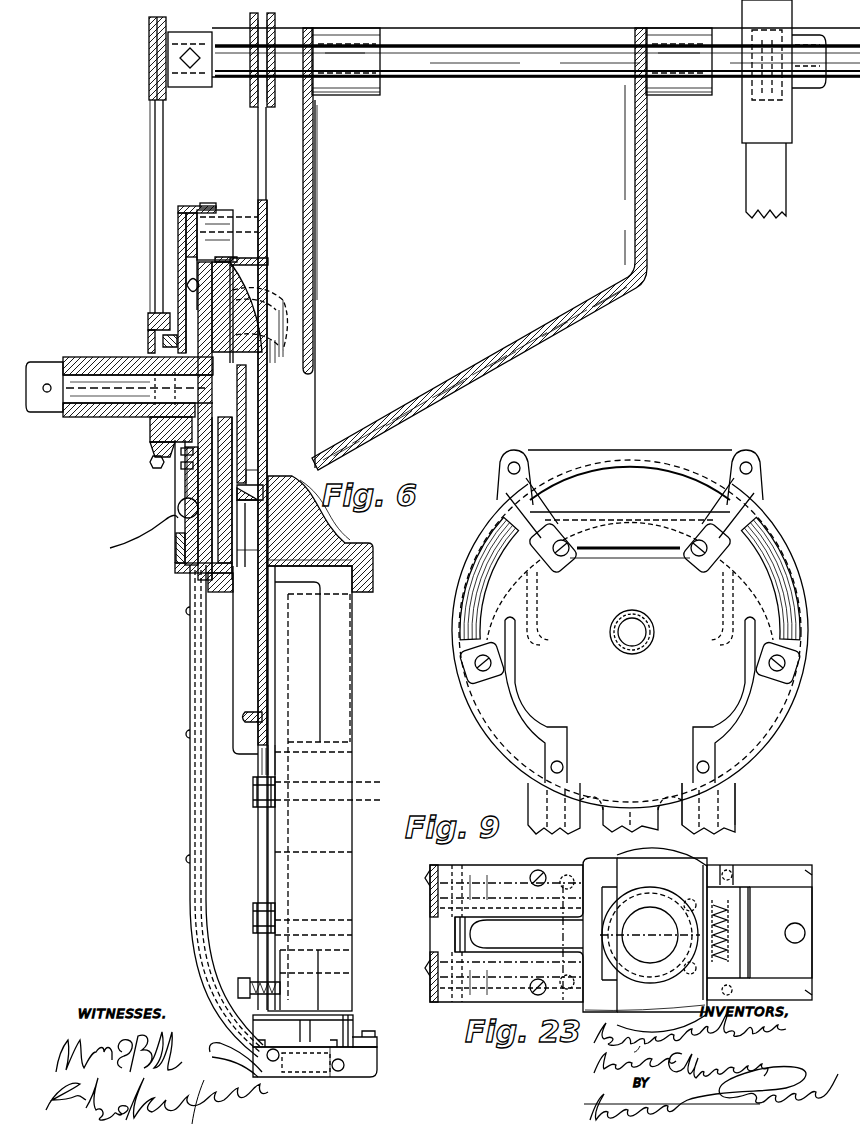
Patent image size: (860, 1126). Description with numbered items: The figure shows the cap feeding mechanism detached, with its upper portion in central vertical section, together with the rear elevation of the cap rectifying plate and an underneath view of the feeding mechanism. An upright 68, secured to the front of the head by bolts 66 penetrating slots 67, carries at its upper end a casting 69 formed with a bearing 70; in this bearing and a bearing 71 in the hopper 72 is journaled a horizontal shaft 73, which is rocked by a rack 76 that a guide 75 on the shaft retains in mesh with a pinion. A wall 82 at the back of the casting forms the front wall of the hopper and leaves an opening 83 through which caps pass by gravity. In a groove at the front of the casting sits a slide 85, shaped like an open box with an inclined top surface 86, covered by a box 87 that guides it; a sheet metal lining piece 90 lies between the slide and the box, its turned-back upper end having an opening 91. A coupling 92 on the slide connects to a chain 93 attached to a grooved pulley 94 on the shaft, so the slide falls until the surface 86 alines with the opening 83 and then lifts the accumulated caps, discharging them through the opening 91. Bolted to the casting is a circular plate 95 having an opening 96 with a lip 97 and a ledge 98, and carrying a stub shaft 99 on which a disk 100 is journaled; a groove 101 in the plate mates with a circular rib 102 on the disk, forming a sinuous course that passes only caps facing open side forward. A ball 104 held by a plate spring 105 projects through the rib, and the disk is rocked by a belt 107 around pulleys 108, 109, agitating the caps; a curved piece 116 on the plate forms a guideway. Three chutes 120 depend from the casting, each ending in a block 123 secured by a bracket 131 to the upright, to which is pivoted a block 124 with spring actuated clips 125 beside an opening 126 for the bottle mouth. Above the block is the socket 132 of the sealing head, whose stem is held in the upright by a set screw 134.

In FIG. 6, the bolts 66 is at (254, 808).
In FIG. 6, the slots 67 is at (262, 860).
In FIG. 6, the upright 68 is at (344, 684).
In FIG. 6, the casting 69 is at (326, 530).
In FIG. 6, the bearing 70 is at (352, 92).
In FIG. 6, the bearing 71 is at (682, 92).
In FIG. 6, the hopper 72 is at (570, 325).
In FIG. 6, the horizontal shaft 73 is at (496, 74).
In FIG. 6, the guide 75 is at (790, 130).
In FIG. 6, the rack 76 is at (780, 178).
In FIG. 6, the wall 82 is at (312, 345).
In FIG. 6, the opening 83 is at (312, 407).
In FIG. 6, the slide 85 is at (262, 690).
In FIG. 6, the top surface 86 is at (250, 505).
In FIG. 6, the box 87 is at (185, 490).
In FIG. 6, the sheet metal lining piece 90 is at (228, 460).
In FIG. 6, the opening 91 is at (245, 262).
In FIG. 6, the coupling 92 is at (262, 483).
In FIG. 6, the chain 93 is at (262, 410).
In FIG. 6, the grooved pulley 94 is at (278, 22).
In FIG. 6, the circular plate 95 is at (185, 556).
In FIG. 9, the circular plate 95 is at (500, 735).
In FIG. 6, the opening 96 is at (178, 248).
In FIG. 9, the opening 96 is at (652, 475).
In FIG. 6, the lip 97 is at (226, 266).
In FIG. 9, the lip 97 is at (632, 512).
In FIG. 6, the ledge 98 is at (212, 282).
In FIG. 6, the stub shaft 99 is at (107, 410).
In FIG. 6, the disk 100 is at (176, 538).
In FIG. 6, the groove 101 is at (226, 540).
In FIG. 6, the circular rib 102 is at (178, 508).
In FIG. 6, the ball 104 is at (112, 548).
In FIG. 6, the plate spring 105 is at (181, 476).
In FIG. 6, the belt 107 is at (156, 236).
In FIG. 6, the pulley 108 is at (149, 463).
In FIG. 6, the pulley 109 is at (162, 98).
In FIG. 9, the curved piece 116 is at (550, 575).
In FIG. 6, the chutes 120 is at (188, 962).
In FIG. 9, the chutes 120 is at (736, 808).
In FIG. 23, the chutes 120 is at (436, 954).
In FIG. 6, the block 123 is at (346, 1068).
In FIG. 23, the block 123 is at (772, 868).
In FIG. 6, the block 124 is at (302, 1078).
In FIG. 23, the block 124 is at (628, 1003).
In FIG. 23, the spring actuated clips 125 is at (706, 864).
In FIG. 23, the opening 126 is at (645, 940).
In FIG. 6, the bracket 131 is at (354, 1020).
In FIG. 6, the socket 132 is at (270, 1062).
In FIG. 6, the set screw 134 is at (242, 978).